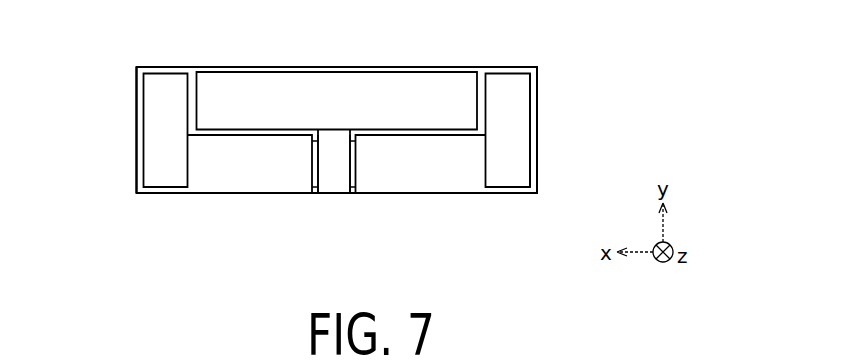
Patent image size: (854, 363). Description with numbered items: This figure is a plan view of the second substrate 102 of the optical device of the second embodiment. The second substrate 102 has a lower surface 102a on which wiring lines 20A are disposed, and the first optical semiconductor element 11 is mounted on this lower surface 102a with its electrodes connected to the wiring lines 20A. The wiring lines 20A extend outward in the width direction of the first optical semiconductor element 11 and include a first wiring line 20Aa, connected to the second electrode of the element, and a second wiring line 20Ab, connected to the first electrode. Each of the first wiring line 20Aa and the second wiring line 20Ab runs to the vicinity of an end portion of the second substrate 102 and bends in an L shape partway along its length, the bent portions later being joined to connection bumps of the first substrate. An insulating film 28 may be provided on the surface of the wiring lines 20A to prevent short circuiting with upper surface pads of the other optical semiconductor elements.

The second substrate 102 is at (312, 87).
The lower surface 102a is at (137, 115).
The wiring lines 20A is at (507, 165).
The first wiring line 20Aa is at (162, 163).
The second wiring line 20Ab is at (507, 133).
The insulating film 28 is at (238, 175).
The first optical semiconductor element 11 is at (336, 176).